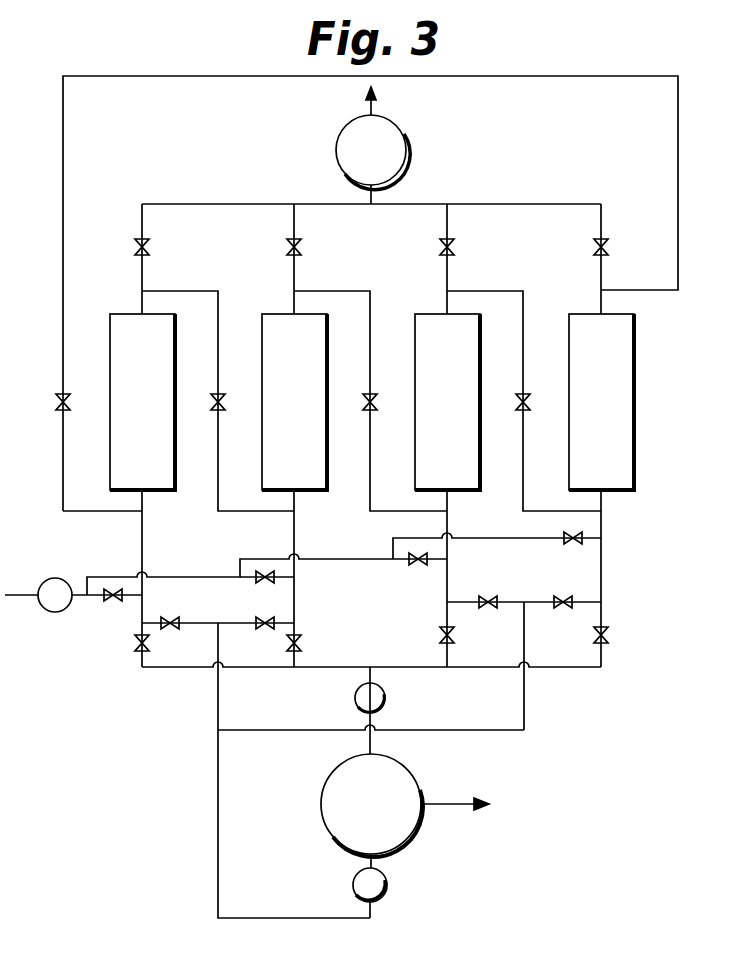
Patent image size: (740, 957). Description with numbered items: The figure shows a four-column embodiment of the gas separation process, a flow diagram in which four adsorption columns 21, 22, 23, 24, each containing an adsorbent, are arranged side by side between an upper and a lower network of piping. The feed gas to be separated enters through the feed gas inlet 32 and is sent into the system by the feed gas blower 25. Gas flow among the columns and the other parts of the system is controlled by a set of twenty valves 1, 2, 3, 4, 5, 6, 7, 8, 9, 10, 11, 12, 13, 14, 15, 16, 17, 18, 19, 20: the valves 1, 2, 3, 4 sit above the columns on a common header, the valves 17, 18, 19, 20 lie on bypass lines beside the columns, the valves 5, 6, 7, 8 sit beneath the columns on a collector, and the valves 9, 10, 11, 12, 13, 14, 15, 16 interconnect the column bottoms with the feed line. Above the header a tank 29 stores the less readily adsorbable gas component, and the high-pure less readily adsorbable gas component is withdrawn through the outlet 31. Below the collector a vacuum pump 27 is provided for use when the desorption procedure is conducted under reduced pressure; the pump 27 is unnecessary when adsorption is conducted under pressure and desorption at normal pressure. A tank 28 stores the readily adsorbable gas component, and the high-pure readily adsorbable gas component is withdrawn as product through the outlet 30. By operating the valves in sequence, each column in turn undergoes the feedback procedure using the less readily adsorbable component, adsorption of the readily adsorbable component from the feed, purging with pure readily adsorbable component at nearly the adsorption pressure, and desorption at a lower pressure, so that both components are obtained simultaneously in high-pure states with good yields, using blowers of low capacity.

The valve 1 is at (150, 251).
The valve 2 is at (302, 251).
The valve 3 is at (455, 251).
The valve 4 is at (609, 251).
The valve 5 is at (149, 647).
The valve 6 is at (302, 647).
The valve 7 is at (455, 640).
The valve 8 is at (609, 638).
The valve 9 is at (168, 617).
The valve 10 is at (288, 615).
The valve 11 is at (483, 592).
The valve 12 is at (526, 77).
The valve 13 is at (113, 604).
The valve 14 is at (259, 582).
The valve 15 is at (409, 568).
The valve 16 is at (568, 544).
The valve 17 is at (70, 397).
The valve 18 is at (225, 397).
The valve 19 is at (377, 397).
The valve 20 is at (530, 397).
The adsorption column 21 is at (109, 433).
The adsorption column 22 is at (260, 433).
The adsorption column 23 is at (414, 433).
The adsorption column 24 is at (568, 433).
The blower for the feed gas 25 is at (58, 612).
The vacuum pump 27 is at (386, 701).
The tank for storing the readily adsorbable gas component 28 is at (325, 822).
The tank for storing the less readily adsorbable gas component 29 is at (405, 129).
The outlet for the product gas of the readily adsorbable component 30 is at (440, 803).
The outlet for the product gas of the less readily adsorbable component 31 is at (368, 106).
The inlet for the feed gas 32 is at (20, 593).